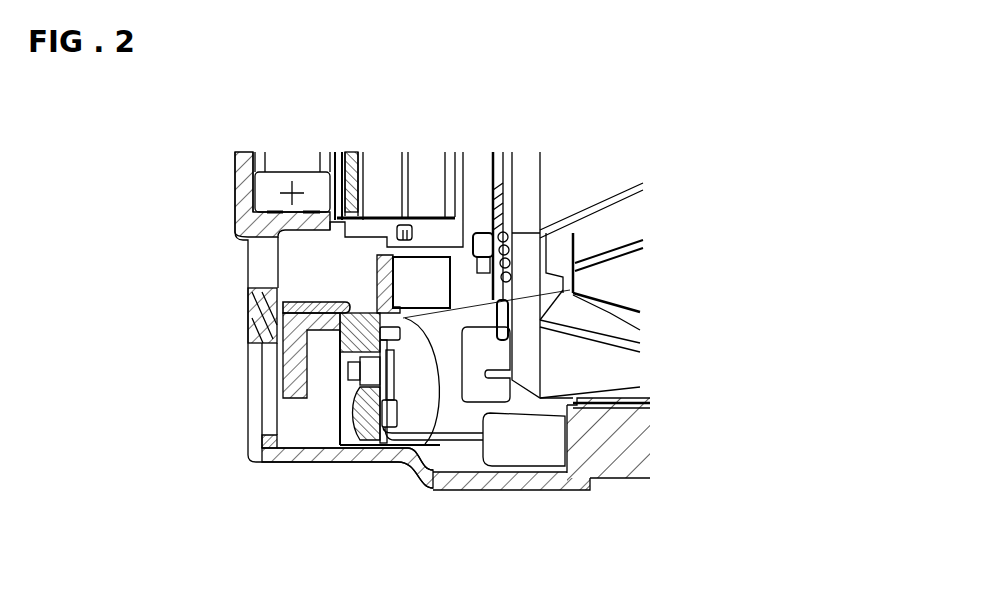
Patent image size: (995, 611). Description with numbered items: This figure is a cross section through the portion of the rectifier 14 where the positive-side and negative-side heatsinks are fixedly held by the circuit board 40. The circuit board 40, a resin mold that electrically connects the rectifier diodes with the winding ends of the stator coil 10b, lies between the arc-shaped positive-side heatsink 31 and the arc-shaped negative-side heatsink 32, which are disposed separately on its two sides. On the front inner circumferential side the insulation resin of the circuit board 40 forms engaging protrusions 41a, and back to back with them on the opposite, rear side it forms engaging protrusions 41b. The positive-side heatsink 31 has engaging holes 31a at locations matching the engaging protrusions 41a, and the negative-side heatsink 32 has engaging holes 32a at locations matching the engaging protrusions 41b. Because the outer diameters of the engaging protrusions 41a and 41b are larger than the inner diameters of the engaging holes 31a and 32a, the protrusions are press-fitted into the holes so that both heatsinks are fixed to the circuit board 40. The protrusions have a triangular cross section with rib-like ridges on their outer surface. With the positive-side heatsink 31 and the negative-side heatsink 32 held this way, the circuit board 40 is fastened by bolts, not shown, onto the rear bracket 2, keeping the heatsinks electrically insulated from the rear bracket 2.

The rear bracket 2 is at (552, 490).
The stator coil 10b is at (512, 473).
The rectifier 14 is at (336, 400).
The positive-side heatsink 31 is at (380, 268).
The engaging holes 31a is at (570, 290).
The negative-side heatsink 32 is at (272, 395).
The engaging holes 32a is at (283, 317).
The circuit board 40 is at (360, 403).
The engaging protrusions 41a is at (430, 477).
The engaging protrusions 41b is at (283, 316).